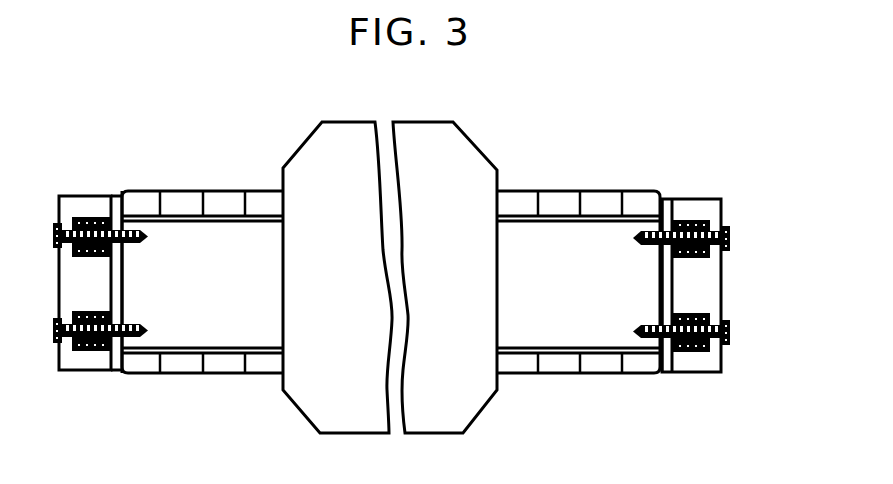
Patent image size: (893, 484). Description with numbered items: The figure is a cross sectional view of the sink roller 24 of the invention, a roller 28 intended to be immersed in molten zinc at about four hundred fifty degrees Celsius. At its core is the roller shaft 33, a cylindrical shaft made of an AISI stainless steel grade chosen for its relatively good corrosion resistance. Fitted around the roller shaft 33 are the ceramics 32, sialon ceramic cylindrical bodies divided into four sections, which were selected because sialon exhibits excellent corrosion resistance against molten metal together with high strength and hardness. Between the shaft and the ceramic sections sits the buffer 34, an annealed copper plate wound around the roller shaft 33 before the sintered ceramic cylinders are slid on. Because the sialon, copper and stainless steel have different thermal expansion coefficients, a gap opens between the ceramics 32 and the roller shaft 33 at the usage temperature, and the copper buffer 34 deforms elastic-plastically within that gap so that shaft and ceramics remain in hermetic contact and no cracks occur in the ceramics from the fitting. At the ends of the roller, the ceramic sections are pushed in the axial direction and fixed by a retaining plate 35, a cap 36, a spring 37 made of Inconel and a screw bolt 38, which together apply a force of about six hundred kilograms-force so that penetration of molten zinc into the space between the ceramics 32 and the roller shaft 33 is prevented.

The sink roller 24 is at (303, 146).
The roller 28 is at (607, 383).
The ceramics 32 is at (568, 203).
The roller shaft 33 is at (517, 237).
The buffer 34 is at (629, 222).
The retaining plate 35 is at (670, 207).
The cap 36 is at (700, 208).
The spring 37 is at (702, 218).
The screw bolt 38 is at (730, 238).